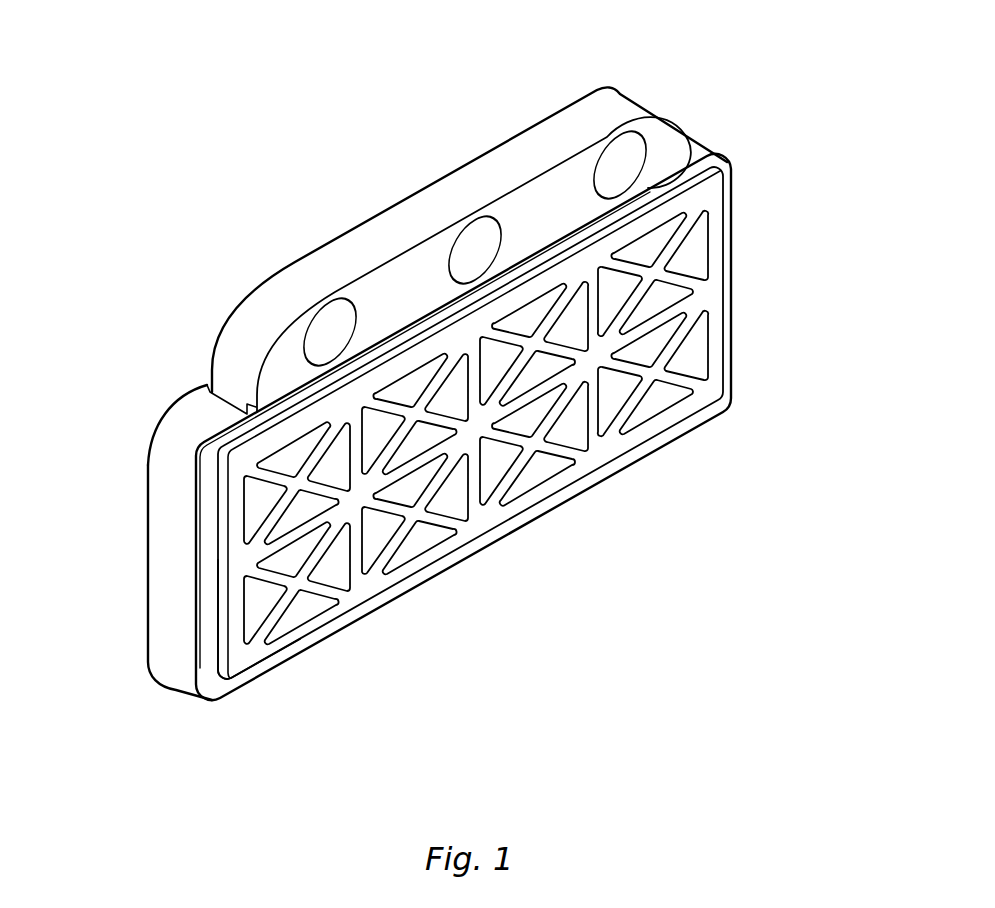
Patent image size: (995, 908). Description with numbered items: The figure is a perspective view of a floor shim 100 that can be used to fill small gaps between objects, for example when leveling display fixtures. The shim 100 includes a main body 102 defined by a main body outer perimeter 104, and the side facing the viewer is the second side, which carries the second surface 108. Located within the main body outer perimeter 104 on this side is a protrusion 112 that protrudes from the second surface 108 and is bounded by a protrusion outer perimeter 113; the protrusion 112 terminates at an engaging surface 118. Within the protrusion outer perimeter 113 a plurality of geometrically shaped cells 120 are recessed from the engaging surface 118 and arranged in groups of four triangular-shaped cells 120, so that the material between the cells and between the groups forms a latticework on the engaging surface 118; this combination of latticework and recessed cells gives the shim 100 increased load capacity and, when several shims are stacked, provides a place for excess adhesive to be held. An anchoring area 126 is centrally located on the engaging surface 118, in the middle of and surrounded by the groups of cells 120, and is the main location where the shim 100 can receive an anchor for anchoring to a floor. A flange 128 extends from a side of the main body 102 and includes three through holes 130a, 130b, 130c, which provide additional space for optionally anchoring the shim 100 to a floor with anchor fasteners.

The shim 100 is at (265, 160).
The main body 102 is at (103, 440).
The main body outer perimeter 104 is at (732, 292).
The second surface 108 is at (688, 170).
The protrusion 112 is at (583, 457).
The protrusion outer perimeter 113 is at (223, 663).
The engaging surface 118 is at (697, 392).
The geometrically shaped cells 120 is at (677, 283).
The anchoring area 126 is at (490, 429).
The flange 128 is at (143, 420).
The through hole 130a is at (340, 293).
The through hole 130b is at (473, 217).
The through hole 130c is at (613, 138).